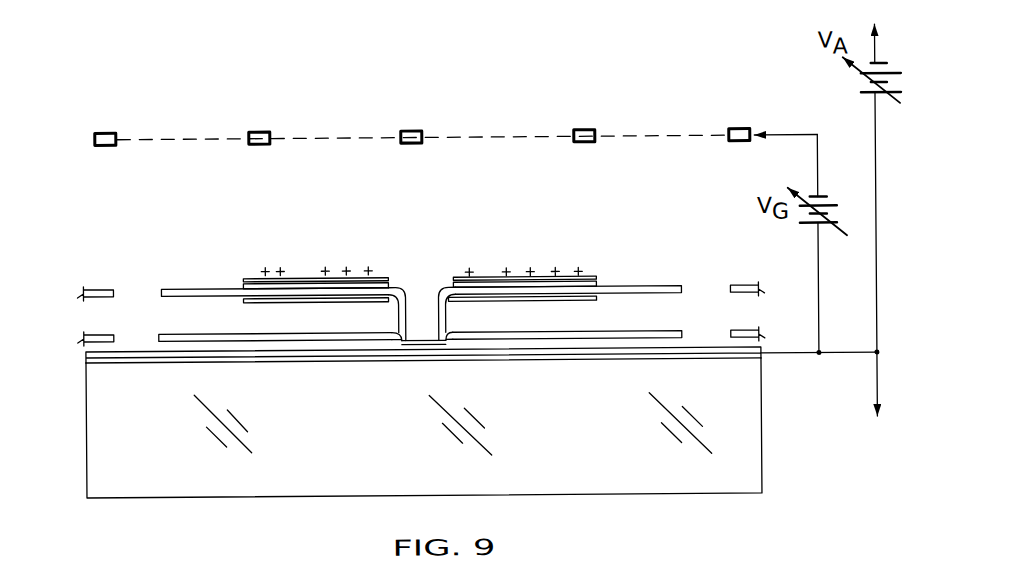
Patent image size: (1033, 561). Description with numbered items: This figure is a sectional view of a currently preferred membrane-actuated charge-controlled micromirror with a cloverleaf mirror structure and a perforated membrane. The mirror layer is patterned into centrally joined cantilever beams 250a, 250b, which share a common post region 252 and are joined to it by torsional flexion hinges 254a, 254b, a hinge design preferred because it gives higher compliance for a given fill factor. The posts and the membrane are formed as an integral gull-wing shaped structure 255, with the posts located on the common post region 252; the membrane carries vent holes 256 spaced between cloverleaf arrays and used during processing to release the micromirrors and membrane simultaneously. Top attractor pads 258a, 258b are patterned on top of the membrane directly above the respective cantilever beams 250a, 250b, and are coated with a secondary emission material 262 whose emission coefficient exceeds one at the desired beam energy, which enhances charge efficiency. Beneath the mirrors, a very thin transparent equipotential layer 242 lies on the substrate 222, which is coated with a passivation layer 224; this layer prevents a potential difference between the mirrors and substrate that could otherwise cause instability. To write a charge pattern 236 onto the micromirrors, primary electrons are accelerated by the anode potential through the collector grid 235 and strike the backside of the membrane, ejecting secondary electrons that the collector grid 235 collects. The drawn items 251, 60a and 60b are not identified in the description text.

The substrate 222 is at (152, 473).
The passivation layer 224 is at (80, 364).
The collector grid 235 is at (135, 139).
The charge pattern 236 is at (380, 239).
The transparent equipotential layer 242 is at (85, 355).
The cantilever beam 250a is at (163, 335).
The cantilever beam 250b is at (677, 335).
The upper cantilever electrode 251 is at (182, 288).
The common post region 252 is at (413, 351).
The torsional flexion hinge 254a is at (398, 336).
The torsional flexion hinge 254b is at (447, 340).
The gull-wing shaped structure 255 is at (420, 287).
The vent holes 256 is at (140, 286).
The top attractor pad 258a is at (247, 287).
The top attractor pad 258b is at (600, 285).
The electrode layer 60a is at (245, 305).
The electrode layer 60b is at (582, 306).
The secondary emission material 262 is at (307, 280).